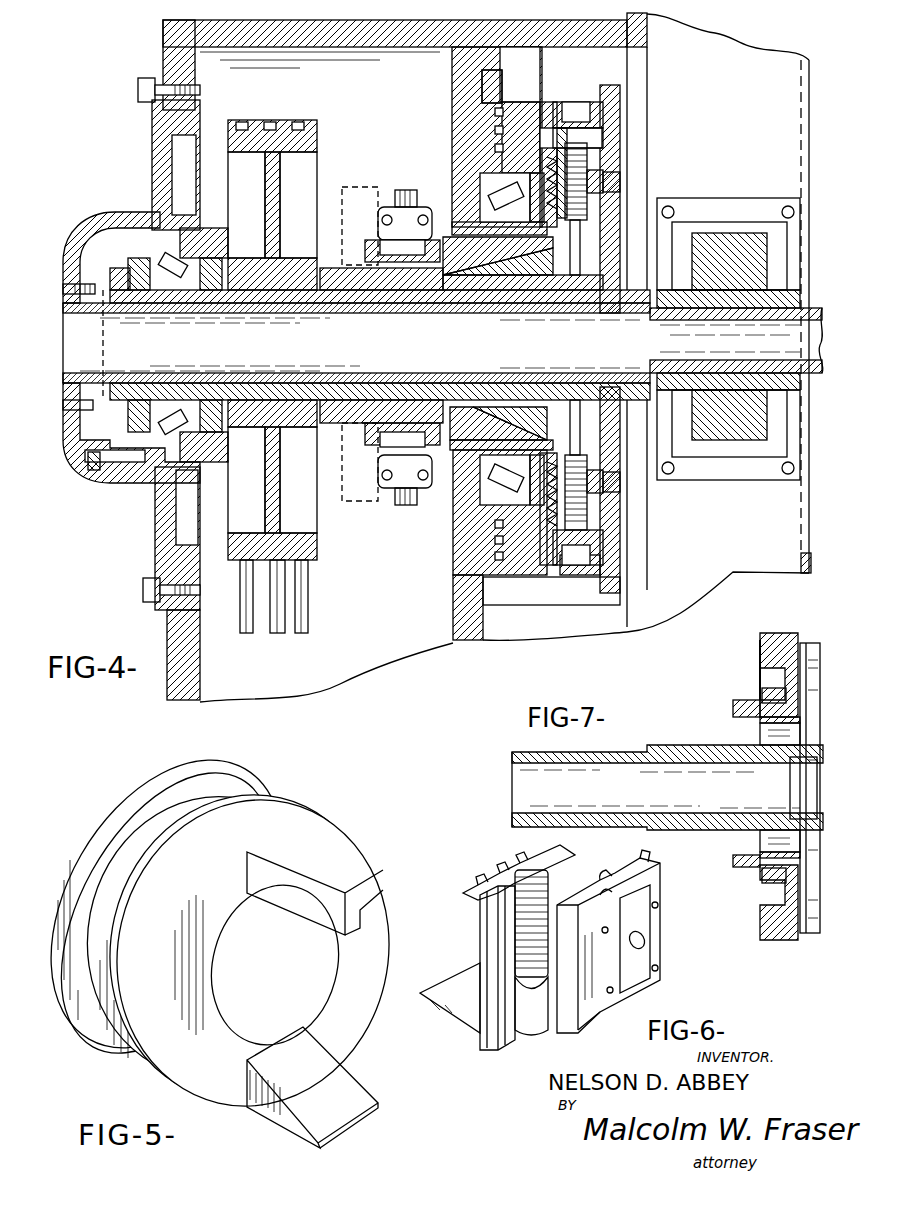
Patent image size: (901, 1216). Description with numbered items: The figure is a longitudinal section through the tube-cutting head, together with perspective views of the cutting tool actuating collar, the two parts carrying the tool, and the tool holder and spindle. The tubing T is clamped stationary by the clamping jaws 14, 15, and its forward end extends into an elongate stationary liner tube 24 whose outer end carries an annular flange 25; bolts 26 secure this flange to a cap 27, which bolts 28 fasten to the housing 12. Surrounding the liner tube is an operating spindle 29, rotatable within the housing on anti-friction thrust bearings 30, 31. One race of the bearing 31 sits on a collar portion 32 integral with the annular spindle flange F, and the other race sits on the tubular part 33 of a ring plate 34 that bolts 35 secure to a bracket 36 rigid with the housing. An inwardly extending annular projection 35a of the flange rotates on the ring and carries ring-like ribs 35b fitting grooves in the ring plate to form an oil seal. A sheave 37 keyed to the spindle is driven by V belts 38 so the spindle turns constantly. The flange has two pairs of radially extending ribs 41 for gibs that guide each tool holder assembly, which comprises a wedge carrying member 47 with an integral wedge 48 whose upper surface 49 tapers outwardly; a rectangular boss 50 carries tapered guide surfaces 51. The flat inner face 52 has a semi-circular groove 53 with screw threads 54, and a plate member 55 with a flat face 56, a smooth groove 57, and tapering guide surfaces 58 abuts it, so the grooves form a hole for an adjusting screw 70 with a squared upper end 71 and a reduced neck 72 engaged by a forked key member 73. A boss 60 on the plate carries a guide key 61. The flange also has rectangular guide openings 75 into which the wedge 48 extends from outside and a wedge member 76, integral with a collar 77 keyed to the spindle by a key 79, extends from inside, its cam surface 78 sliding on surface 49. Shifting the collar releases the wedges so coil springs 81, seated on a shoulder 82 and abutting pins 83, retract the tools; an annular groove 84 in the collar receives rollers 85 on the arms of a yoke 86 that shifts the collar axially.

In FIG. 4, the housing 12 is at (155, 555).
In FIG. 4, the clamping jaw 14 is at (745, 242).
In FIG. 4, the clamping jaw 15 is at (750, 440).
In FIG. 4, the stationary liner tube 24 is at (273, 376).
In FIG. 4, the annular flange 25 is at (72, 392).
In FIG. 4, the bolts 26 is at (70, 298).
In FIG. 4, the cap 27 is at (118, 482).
In FIG. 4, the bolts 28 is at (93, 464).
In FIG. 4, the operating spindle 29 is at (158, 290).
In FIG. 7, the operating spindle 29 is at (520, 764).
In FIG. 4, the anti-friction thrust bearing 30 is at (172, 260).
In FIG. 4, the anti-friction thrust bearing 31 is at (505, 190).
In FIG. 4, the collar portion 32 is at (492, 208).
In FIG. 7, the collar portion 32 is at (740, 712).
In FIG. 4, the tubular part 33 is at (495, 163).
In FIG. 4, the ring plate 34 is at (452, 170).
In FIG. 4, the bolts 35 is at (508, 100).
In FIG. 4, the annular projection 35a is at (498, 125).
In FIG. 7, the annular projection 35a is at (773, 640).
In FIG. 4, the ring-like ribs 35b is at (497, 112).
In FIG. 7, the ring-like ribs 35b is at (760, 667).
In FIG. 4, the bracket 36 is at (480, 58).
In FIG. 4, the sheave 37 is at (273, 195).
In FIG. 4, the V belts 38 is at (276, 632).
In FIG. 7, the radially extending ribs 41 is at (822, 645).
In FIG. 6, the wedge carrying member 47 is at (492, 1040).
In FIG. 4, the wedge 48 is at (530, 420).
In FIG. 6, the wedge 48 is at (455, 1013).
In FIG. 4, the upper surface 49 is at (500, 410).
In FIG. 6, the upper surface 49 is at (461, 980).
In FIG. 6, the rectangular boss 50 is at (476, 893).
In FIG. 6, the tapered guide surfaces 51 is at (480, 897).
In FIG. 6, the inner face 52 is at (578, 872).
In FIG. 6, the semi-circular groove 53 is at (528, 1000).
In FIG. 4, the screw threads 54 is at (576, 209).
In FIG. 6, the screw threads 54 is at (520, 928).
In FIG. 4, the plate member 55 is at (603, 160).
In FIG. 6, the plate member 55 is at (588, 1018).
In FIG. 6, the flat face 56 is at (647, 860).
In FIG. 6, the semi-circular groove 57 is at (605, 897).
In FIG. 6, the tapering guide surfaces 58 is at (655, 880).
In FIG. 6, the boss 60 is at (652, 918).
In FIG. 6, the guide key 61 is at (645, 953).
In FIG. 4, the adjusting screw 70 is at (604, 130).
In FIG. 4, the squared upper end 71 is at (572, 165).
In FIG. 4, the reduced neck 72 is at (621, 182).
In FIG. 4, the key member 73 is at (604, 175).
In FIG. 4, the guide openings 75 is at (480, 490).
In FIG. 7, the guide openings 75 is at (760, 728).
In FIG. 4, the wedge member 76 is at (470, 262).
In FIG. 5, the wedge member 76 is at (325, 852).
In FIG. 4, the collar 77 is at (370, 452).
In FIG. 5, the collar 77 is at (150, 1040).
In FIG. 4, the cam surface 78 is at (505, 262).
In FIG. 5, the cam surface 78 is at (323, 1090).
In FIG. 4, the key 79 is at (405, 292).
In FIG. 4, the coil springs 81 is at (540, 515).
In FIG. 4, the shoulder 82 is at (540, 250).
In FIG. 7, the shoulder 82 is at (765, 700).
In FIG. 4, the pins 83 is at (552, 130).
In FIG. 6, the pins 83 is at (498, 880).
In FIG. 5, the annular groove 84 is at (228, 792).
In FIG. 4, the rollers 85 is at (385, 240).
In FIG. 4, the yoke 86 is at (393, 490).
In FIG. 4, the spindle flange F is at (550, 112).
In FIG. 7, the spindle flange F is at (750, 676).
In FIG. 4, the tubing T is at (821, 305).